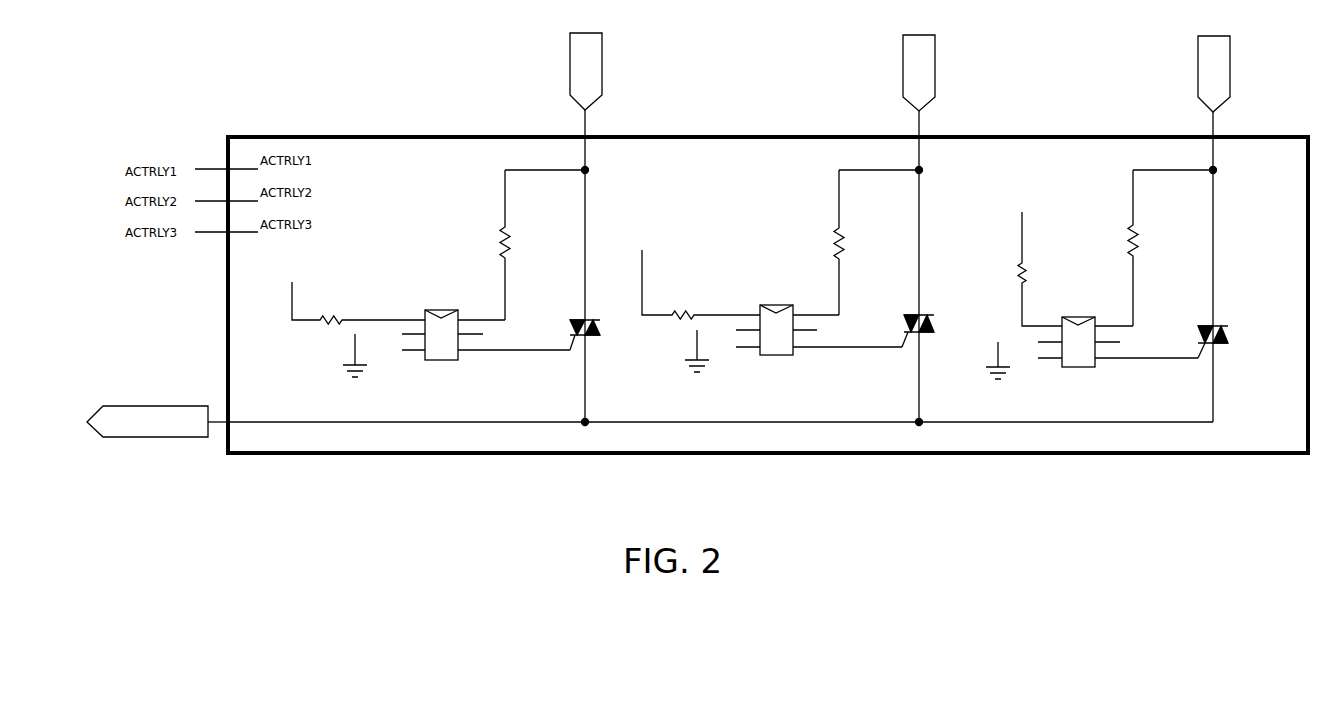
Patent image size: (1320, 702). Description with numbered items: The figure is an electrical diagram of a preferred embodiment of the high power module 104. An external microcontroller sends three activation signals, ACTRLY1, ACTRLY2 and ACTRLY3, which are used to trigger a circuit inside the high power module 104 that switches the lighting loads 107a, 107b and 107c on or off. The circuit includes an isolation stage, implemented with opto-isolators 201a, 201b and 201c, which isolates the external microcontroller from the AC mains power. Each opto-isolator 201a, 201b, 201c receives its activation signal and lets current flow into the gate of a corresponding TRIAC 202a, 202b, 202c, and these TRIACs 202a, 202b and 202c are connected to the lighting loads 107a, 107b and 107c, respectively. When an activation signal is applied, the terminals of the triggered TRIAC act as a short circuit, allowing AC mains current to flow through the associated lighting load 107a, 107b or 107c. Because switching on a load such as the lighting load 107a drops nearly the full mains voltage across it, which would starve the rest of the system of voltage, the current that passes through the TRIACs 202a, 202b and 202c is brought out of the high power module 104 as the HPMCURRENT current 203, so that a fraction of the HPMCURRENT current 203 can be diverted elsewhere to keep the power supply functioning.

The high power module 104 is at (1085, 462).
The lighting load 107a is at (586, 227).
The lighting load 107b is at (919, 228).
The lighting load 107c is at (1214, 229).
The opto-isolator 201a is at (462, 367).
The opto-isolator 201b is at (795, 361).
The opto-isolator 201c is at (1098, 369).
The TRIAC 202a is at (603, 344).
The TRIAC 202b is at (928, 339).
The TRIAC 202c is at (1229, 349).
The HPMCURRENT current 203 is at (156, 402).